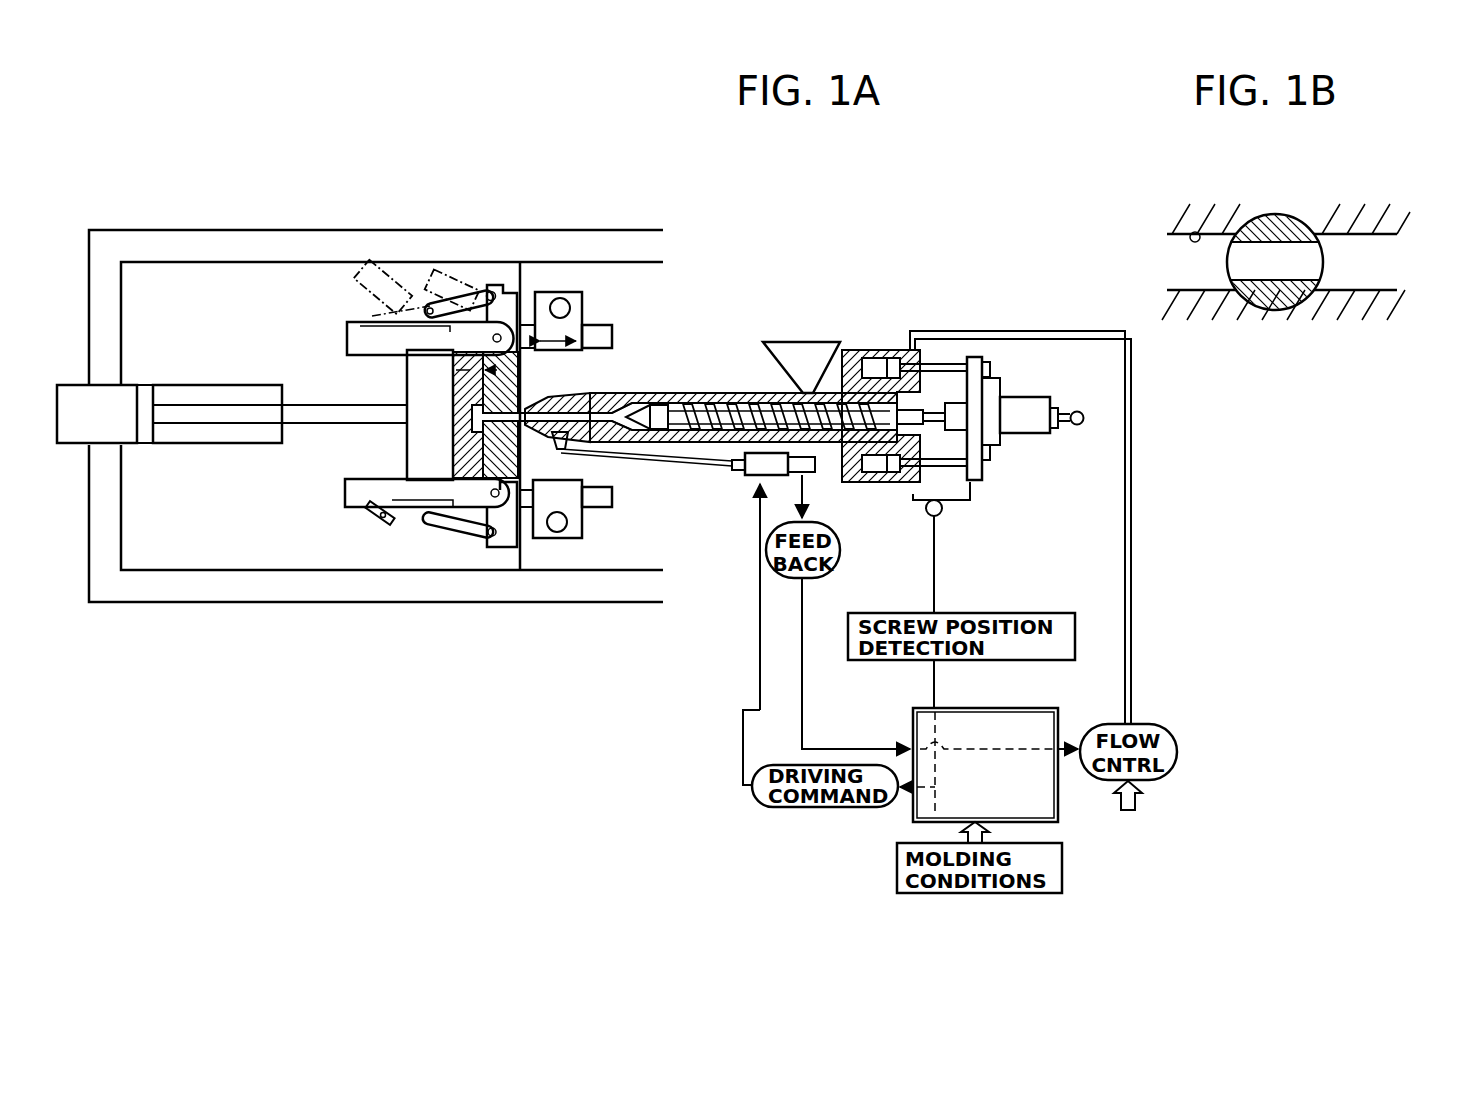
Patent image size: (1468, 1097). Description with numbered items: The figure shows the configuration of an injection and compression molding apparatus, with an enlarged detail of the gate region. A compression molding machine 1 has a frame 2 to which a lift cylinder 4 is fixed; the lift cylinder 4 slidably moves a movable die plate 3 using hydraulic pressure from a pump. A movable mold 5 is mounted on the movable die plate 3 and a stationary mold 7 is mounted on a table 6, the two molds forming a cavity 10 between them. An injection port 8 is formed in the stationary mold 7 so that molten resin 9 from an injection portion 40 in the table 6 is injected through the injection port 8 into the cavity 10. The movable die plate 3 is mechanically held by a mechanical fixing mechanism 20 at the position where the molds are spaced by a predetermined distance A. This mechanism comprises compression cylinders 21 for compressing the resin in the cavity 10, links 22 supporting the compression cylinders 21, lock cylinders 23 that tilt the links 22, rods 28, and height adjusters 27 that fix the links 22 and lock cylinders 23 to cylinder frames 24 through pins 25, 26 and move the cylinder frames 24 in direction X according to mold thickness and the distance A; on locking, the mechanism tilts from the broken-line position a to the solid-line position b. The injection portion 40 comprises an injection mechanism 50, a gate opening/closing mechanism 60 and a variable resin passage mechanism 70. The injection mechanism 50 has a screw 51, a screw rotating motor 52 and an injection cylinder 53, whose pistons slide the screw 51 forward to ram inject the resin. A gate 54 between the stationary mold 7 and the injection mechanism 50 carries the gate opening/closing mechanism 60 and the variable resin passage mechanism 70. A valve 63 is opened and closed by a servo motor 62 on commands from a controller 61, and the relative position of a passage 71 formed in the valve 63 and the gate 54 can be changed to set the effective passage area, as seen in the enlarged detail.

In FIG. 1A, the compression molding machine 1 is at (270, 226).
In FIG. 1A, the frame 2 is at (393, 240).
In FIG. 1A, the movable die plate 3 is at (410, 373).
In FIG. 1A, the lift cylinder 4 is at (138, 386).
In FIG. 1A, the movable mold 5 is at (456, 431).
In FIG. 1A, the table 6 is at (548, 555).
In FIG. 1A, the stationary mold 7 is at (508, 452).
In FIG. 1A, the injection port 8 is at (503, 379).
In FIG. 1A, the molten resin 9 is at (618, 395).
In FIG. 1A, the cavity 10 is at (456, 456).
In FIG. 1A, the mechanical fixing mechanism 20 is at (406, 537).
In FIG. 1A, the compression cylinders 21 is at (362, 485).
In FIG. 1A, the links 22 is at (401, 492).
In FIG. 1A, the lock cylinders 23 is at (458, 537).
In FIG. 1A, the cylinder frames 24 is at (514, 540).
In FIG. 1A, the pin 25 is at (512, 320).
In FIG. 1A, the pin 26 is at (496, 290).
In FIG. 1A, the height adjusters 27 is at (568, 292).
In FIG. 1A, the rods 28 is at (613, 326).
In FIG. 1A, the injection portion 40 is at (742, 346).
In FIG. 1A, the injection mechanism 50 is at (686, 393).
In FIG. 1A, the screw 51 is at (730, 404).
In FIG. 1A, the screw rotating motor 52 is at (1030, 398).
In FIG. 1A, the injection cylinder 53 is at (862, 350).
In FIG. 1B, the gate 54 is at (1198, 230).
In FIG. 1A, the gate opening/closing mechanism 60 is at (560, 412).
In FIG. 1A, the controller 61 is at (1008, 708).
In FIG. 1A, the servo motor 62 is at (757, 478).
In FIG. 1B, the valve 63 is at (1300, 216).
In FIG. 1A, the variable resin passage mechanism 70 is at (580, 401).
In FIG. 1B, the passage 71 is at (1318, 265).
In FIG. 1A, the predetermined distance A is at (476, 384).
In FIG. 1A, the broken-line position a is at (416, 288).
In FIG. 1A, the solid-line position b is at (415, 309).